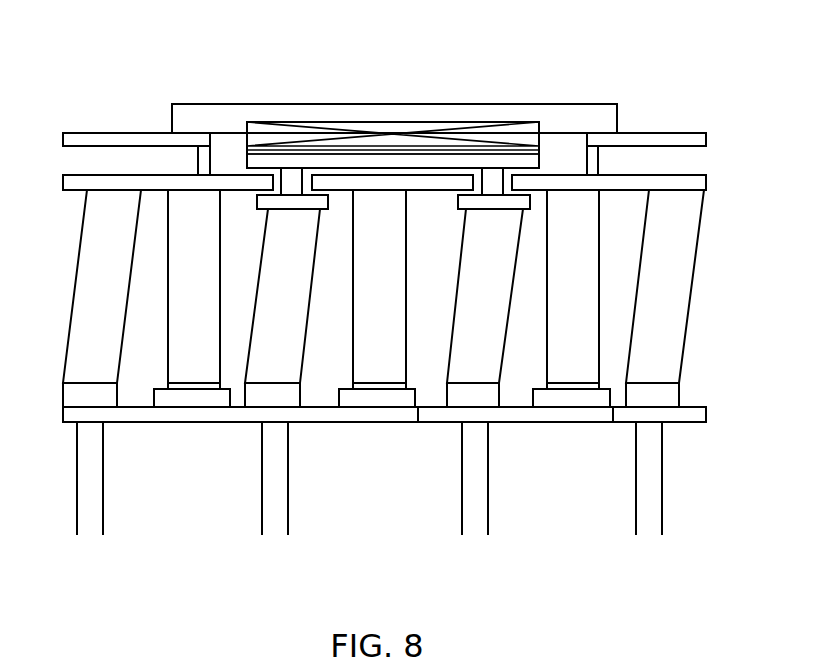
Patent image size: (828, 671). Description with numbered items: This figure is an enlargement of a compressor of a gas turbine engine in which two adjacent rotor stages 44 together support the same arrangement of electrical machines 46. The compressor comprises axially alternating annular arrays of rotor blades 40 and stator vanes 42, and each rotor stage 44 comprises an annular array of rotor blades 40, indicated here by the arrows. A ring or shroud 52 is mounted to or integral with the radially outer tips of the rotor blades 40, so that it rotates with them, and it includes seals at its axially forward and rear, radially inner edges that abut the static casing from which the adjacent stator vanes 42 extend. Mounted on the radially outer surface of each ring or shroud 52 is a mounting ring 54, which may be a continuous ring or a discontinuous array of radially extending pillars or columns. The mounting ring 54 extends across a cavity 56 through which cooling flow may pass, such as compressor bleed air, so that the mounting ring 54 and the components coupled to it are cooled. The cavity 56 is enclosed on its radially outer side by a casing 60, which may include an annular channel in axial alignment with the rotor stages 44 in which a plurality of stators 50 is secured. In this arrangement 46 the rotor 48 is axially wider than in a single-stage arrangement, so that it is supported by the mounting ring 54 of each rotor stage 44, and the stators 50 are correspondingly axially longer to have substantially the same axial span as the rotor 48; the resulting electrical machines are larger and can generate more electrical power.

The rotor blades 40 is at (271, 281).
The stator vanes 42 is at (365, 306).
The rotor stage 44 is at (276, 503).
The arrangement of electrical machines 46 is at (285, 78).
The rotor 48 is at (270, 162).
The stators 50 is at (263, 133).
The ring or shroud 52 is at (277, 203).
The mounting ring 54 is at (294, 187).
The cavity 56 is at (384, 161).
The casing 60 is at (685, 138).